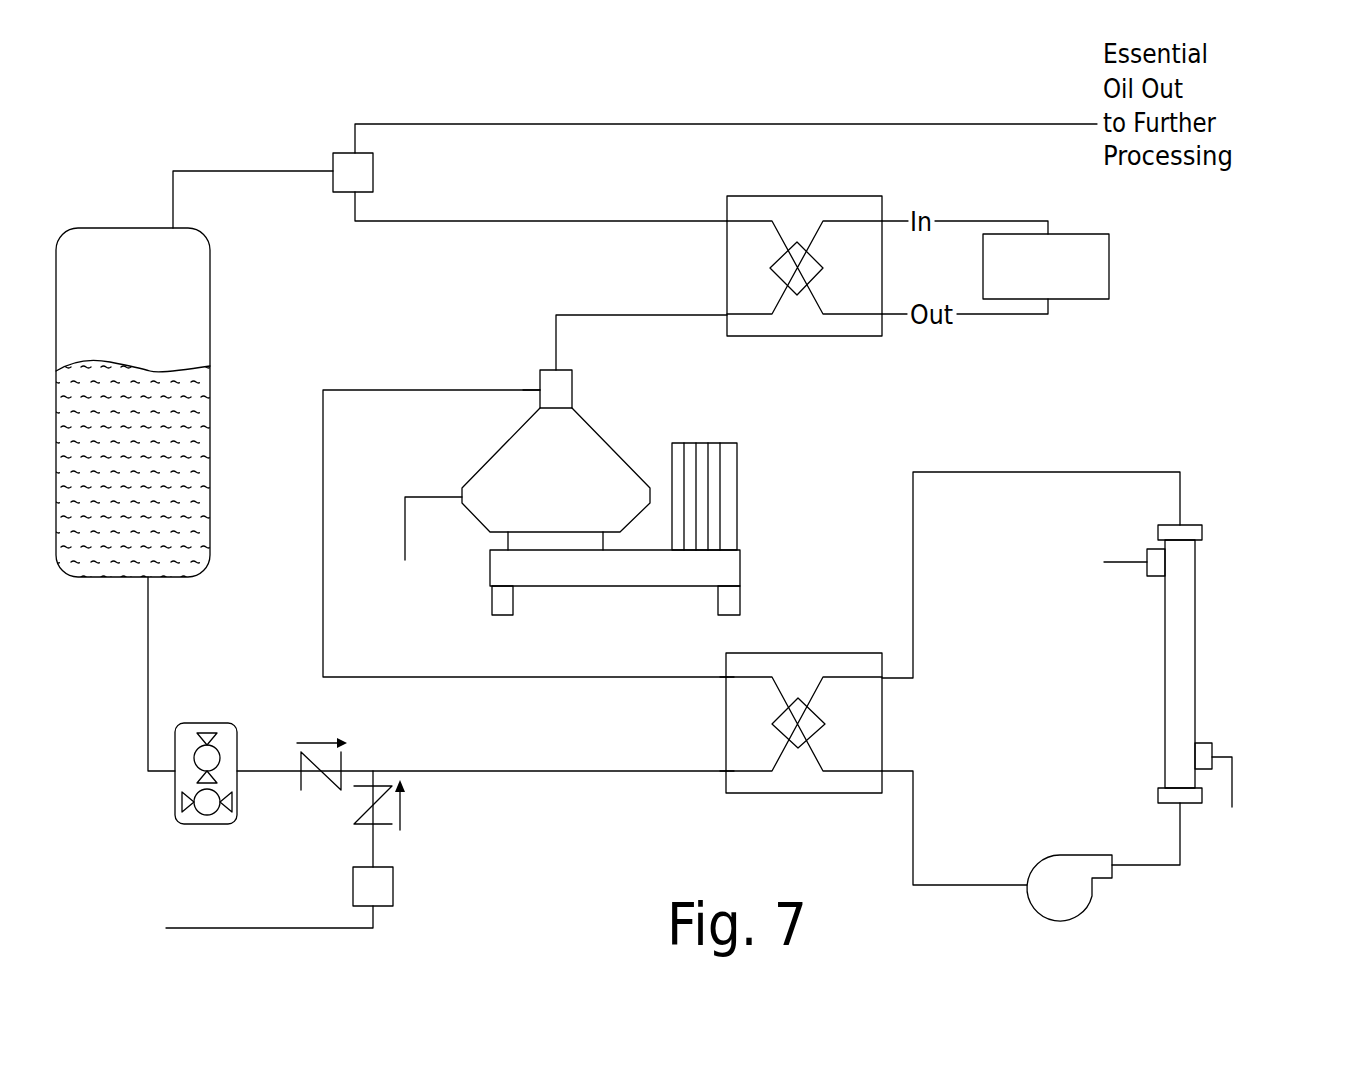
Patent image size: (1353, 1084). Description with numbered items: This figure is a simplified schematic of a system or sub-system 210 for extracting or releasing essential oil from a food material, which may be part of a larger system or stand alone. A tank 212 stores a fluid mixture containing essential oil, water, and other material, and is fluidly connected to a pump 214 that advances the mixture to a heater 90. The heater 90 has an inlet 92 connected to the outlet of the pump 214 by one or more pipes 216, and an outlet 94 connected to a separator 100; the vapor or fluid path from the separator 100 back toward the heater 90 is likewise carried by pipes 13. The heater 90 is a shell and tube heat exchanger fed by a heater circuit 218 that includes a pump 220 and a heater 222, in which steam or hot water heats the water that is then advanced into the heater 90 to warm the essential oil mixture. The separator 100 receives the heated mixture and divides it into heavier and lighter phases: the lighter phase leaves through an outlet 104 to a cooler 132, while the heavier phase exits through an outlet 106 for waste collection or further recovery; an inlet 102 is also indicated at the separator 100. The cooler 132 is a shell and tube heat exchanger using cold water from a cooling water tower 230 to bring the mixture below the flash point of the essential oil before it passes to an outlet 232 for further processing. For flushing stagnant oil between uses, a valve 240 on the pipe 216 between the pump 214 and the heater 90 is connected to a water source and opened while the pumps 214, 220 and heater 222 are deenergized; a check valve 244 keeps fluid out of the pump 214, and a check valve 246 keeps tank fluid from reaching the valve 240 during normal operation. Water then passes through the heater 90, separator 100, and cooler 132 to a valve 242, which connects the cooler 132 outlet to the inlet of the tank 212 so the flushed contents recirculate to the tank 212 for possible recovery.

The pipes 13 is at (465, 678).
The heater 90 is at (882, 728).
The inlet 92 is at (725, 772).
The outlet 94 is at (725, 678).
The separator 100 is at (545, 485).
The separator inlet 102 is at (540, 390).
The outlet 104 is at (558, 371).
The outlet 106 is at (462, 497).
The cooler 132 is at (803, 336).
The system 210 is at (1246, 236).
The tank 212 is at (211, 307).
The pump 214 is at (203, 723).
The pipes 216 is at (512, 772).
The heater circuit 218 is at (1171, 437).
The pump 220 is at (1060, 855).
The heater 222 is at (1238, 659).
The cooling water tower 230 is at (1110, 263).
The outlet 232 is at (973, 124).
The valve 240 is at (393, 887).
The valve 242 is at (373, 172).
The check valve 244 is at (315, 743).
The check valve 246 is at (380, 827).